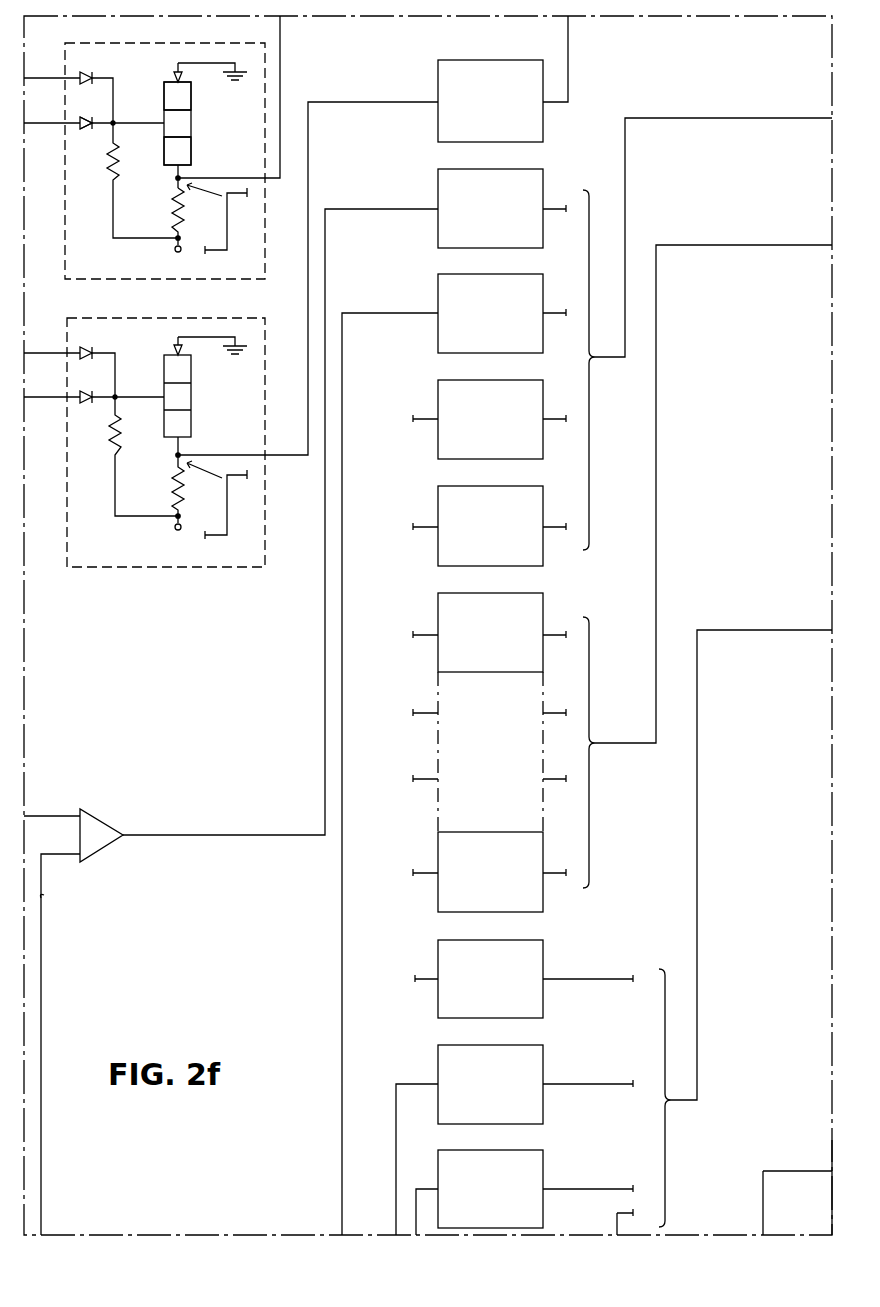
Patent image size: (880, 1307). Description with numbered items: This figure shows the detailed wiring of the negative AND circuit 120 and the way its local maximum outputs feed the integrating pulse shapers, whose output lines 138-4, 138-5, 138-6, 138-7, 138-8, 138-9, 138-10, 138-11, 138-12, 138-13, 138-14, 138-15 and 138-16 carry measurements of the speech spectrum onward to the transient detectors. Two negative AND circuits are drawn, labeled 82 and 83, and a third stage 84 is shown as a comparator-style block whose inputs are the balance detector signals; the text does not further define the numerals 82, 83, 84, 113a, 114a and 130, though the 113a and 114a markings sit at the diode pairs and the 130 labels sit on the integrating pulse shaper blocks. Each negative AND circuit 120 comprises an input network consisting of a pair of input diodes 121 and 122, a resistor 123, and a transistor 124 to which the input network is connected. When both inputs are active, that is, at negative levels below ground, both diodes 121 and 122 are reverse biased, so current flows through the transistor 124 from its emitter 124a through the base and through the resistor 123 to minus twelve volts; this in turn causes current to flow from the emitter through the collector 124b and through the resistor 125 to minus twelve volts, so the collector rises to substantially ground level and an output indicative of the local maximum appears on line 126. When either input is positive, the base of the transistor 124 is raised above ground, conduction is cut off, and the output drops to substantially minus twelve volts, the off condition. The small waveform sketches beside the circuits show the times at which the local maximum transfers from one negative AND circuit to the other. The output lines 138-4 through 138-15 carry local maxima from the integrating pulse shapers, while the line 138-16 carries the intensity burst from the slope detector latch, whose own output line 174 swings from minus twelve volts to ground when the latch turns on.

The R2 maximum detector circuit 82 is at (144, 418).
The R3 maximum detector circuit 83 is at (231, 332).
The R4 comparator amplifier 84 is at (231, 722).
The diode pair input 113a is at (70, 120).
The diode pair input 114a is at (73, 356).
The negative AND circuit 120 is at (175, 43).
The input diode 121 is at (88, 73).
The input diode 122 is at (83, 135).
The resistor 123 is at (117, 147).
The transistor 124 is at (192, 124).
The emitter 124a is at (201, 96).
The collector 124b is at (202, 151).
The resistor 125 is at (183, 207).
The output line 126 is at (281, 84).
The IPS (intermediate pulse stage) block 130 is at (438, 64).
The output line 138-4 is at (568, 57).
The output line 138-5 is at (556, 212).
The output line 138-6 is at (556, 316).
The output line 138-7 is at (558, 422).
The output line 138-8 is at (550, 526).
The output line 138-9 is at (556, 638).
The output line 138-10 is at (556, 716).
The output line 138-11 is at (556, 782).
The output line 138-12 is at (550, 872).
The output line 138-13 is at (579, 979).
The output line 138-14 is at (585, 1084).
The output line 138-15 is at (592, 1189).
The output line 138-16 is at (624, 1212).
The output line 174 is at (781, 1171).